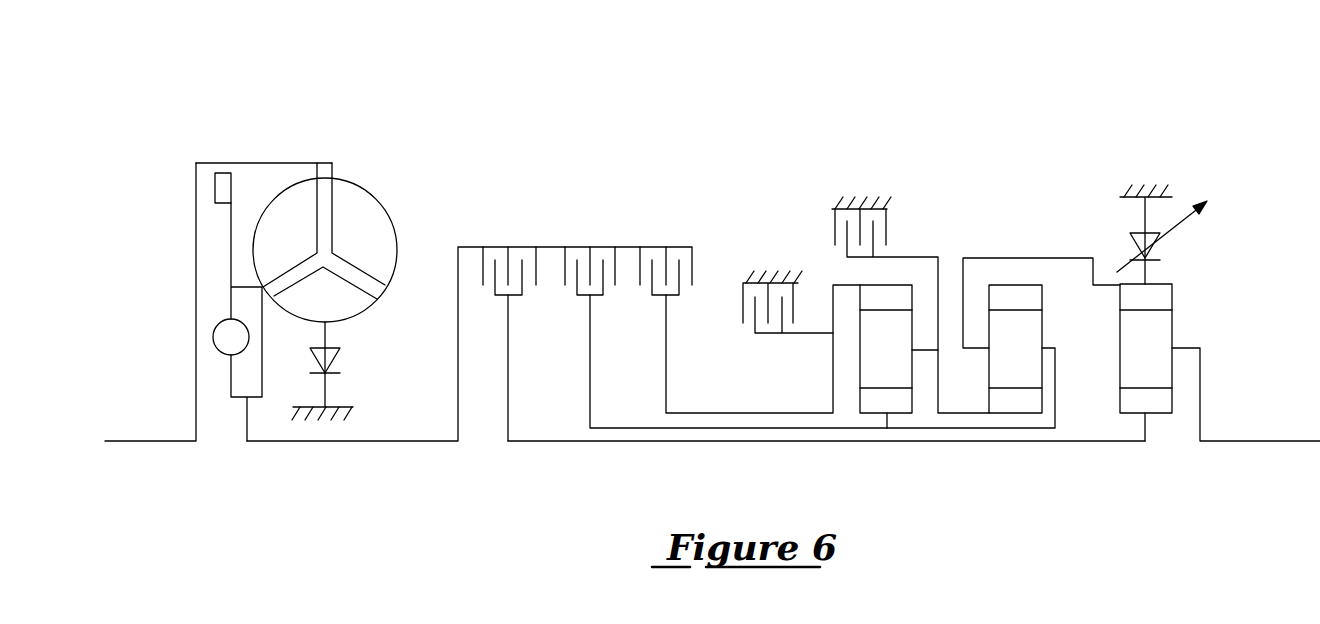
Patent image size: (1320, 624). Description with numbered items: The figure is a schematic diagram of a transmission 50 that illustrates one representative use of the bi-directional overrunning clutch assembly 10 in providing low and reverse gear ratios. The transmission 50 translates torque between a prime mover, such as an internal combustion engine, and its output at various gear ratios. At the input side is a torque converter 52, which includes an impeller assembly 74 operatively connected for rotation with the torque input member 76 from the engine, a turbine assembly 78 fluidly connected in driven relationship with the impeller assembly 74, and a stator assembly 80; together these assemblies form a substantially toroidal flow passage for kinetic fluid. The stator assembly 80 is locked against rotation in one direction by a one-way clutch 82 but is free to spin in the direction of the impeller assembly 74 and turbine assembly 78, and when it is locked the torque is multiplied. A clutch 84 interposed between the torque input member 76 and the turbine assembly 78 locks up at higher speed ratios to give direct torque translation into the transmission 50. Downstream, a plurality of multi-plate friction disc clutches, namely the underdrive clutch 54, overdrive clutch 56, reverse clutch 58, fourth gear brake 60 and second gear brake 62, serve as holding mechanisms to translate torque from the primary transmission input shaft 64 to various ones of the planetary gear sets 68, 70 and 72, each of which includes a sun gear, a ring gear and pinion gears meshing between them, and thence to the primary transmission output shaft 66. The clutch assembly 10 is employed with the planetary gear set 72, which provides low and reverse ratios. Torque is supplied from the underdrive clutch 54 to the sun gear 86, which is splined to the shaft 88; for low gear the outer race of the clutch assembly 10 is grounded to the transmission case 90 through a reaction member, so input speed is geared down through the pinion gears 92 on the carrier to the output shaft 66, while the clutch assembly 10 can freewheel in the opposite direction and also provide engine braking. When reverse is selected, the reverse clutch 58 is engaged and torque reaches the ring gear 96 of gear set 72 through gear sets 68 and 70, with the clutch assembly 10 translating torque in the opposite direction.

The bi-directional overrunning clutch assembly 10 is at (1182, 240).
The transmission 50 is at (673, 128).
The torque converter 52 is at (332, 128).
The underdrive clutch 54 is at (500, 247).
The overdrive clutch 56 is at (582, 247).
The reverse clutch 58 is at (657, 247).
The fourth gear brake 60 is at (780, 270).
The second gear brake 62 is at (866, 206).
The primary transmission input shaft 64 is at (458, 323).
The primary transmission output shaft 66 is at (1202, 392).
The planetary gear set 68 is at (872, 370).
The planetary gear set 70 is at (1002, 370).
The planetary gear set 72 is at (1132, 370).
The impeller assembly 74 is at (362, 207).
The torque input member 76 is at (196, 358).
The turbine assembly 78 is at (283, 207).
The stator assembly 80 is at (297, 300).
The one-way clutch 82 is at (337, 358).
The clutch 84 is at (215, 183).
The sun gear 86 is at (522, 295).
The shaft 88 is at (607, 441).
The transmission case 90 is at (1152, 195).
The pinion gears 92 is at (1152, 335).
The ring gear 96 is at (1147, 297).